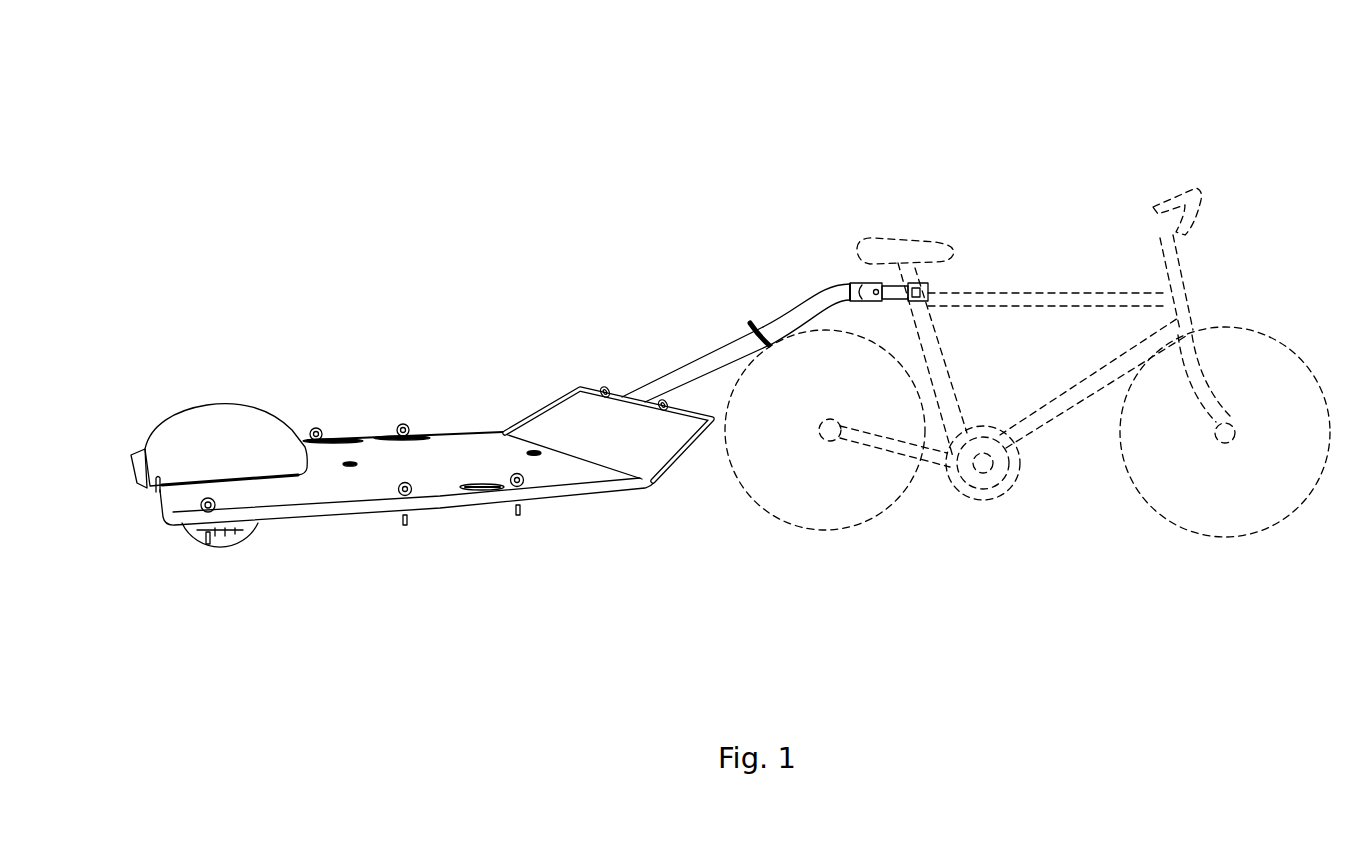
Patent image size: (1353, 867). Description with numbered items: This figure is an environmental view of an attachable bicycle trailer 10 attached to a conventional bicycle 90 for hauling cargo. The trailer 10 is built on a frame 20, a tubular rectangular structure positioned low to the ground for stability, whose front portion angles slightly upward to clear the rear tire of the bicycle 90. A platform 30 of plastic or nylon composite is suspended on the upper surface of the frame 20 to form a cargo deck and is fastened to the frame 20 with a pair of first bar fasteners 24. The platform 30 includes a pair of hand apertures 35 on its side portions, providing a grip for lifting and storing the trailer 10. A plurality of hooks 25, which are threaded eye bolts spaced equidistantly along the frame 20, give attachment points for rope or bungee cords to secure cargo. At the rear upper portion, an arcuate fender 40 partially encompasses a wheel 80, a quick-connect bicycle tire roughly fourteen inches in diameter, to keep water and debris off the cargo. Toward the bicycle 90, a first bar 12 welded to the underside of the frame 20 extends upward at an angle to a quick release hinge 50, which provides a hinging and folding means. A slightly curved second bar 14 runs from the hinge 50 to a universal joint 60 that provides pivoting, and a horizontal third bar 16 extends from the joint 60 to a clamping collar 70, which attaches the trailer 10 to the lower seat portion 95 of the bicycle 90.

The attachable bicycle trailer 10 is at (795, 143).
The first bar 12 is at (680, 387).
The second bar 14 is at (810, 310).
The third bar 16 is at (895, 290).
The frame 20 is at (627, 482).
The first bar fasteners 24 is at (350, 466).
The hooks 25 is at (655, 403).
The platform 30 is at (455, 450).
The hand apertures 35 is at (412, 440).
The fender 40 is at (233, 432).
The quick release hinge 50 is at (755, 322).
The universal joint 60 is at (872, 283).
The clamping collar 70 is at (927, 288).
The wheel 80 is at (240, 537).
The bicycle 90 is at (923, 408).
The lower seat portion 95 is at (893, 250).